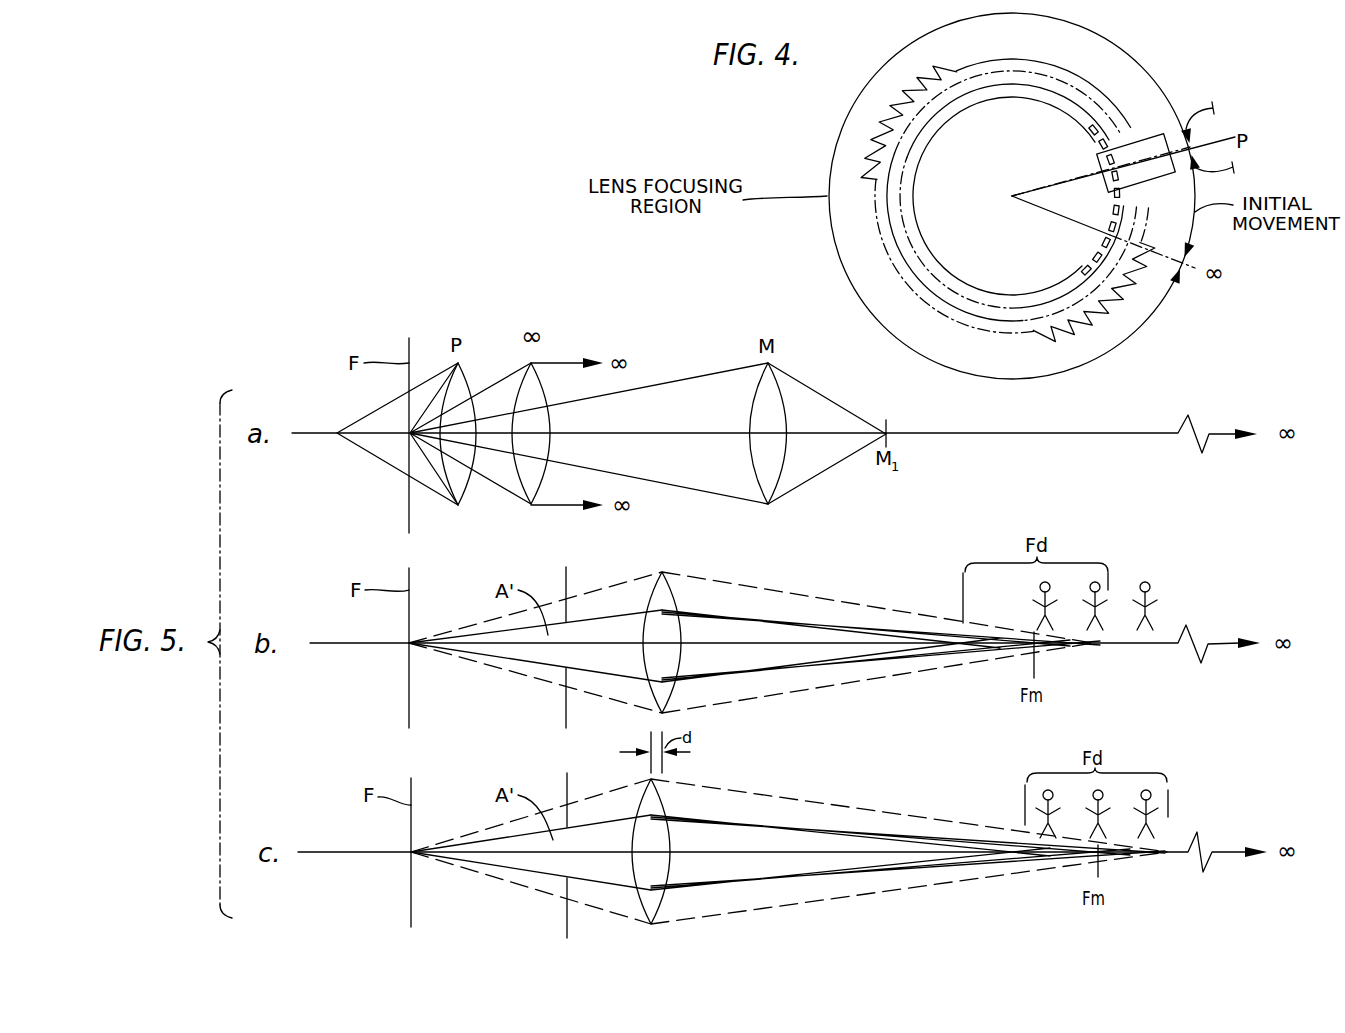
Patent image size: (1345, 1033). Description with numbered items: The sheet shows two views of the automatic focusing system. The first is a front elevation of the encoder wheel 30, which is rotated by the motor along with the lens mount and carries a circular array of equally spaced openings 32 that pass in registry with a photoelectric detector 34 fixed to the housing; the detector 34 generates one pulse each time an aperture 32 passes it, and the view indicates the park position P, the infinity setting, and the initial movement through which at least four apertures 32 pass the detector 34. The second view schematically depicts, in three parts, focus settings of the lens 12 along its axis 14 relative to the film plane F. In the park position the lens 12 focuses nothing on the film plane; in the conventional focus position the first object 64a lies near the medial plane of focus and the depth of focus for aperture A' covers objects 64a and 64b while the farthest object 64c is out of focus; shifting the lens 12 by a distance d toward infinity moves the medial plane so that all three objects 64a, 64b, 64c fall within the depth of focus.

In FIG. 5, the lens 12 is at (462, 378).
In FIG. 5, the axis 14 is at (1030, 434).
In FIG. 4, the encoder wheel 30 is at (1007, 117).
In FIG. 4, the openings 32 is at (1091, 134).
In FIG. 4, the photoelectric detector 34 is at (1153, 148).
In FIG. 5, the first object 64a is at (1040, 586).
In FIG. 5, the second object 64b is at (1092, 583).
In FIG. 5, the farthest object 64c is at (1151, 585).